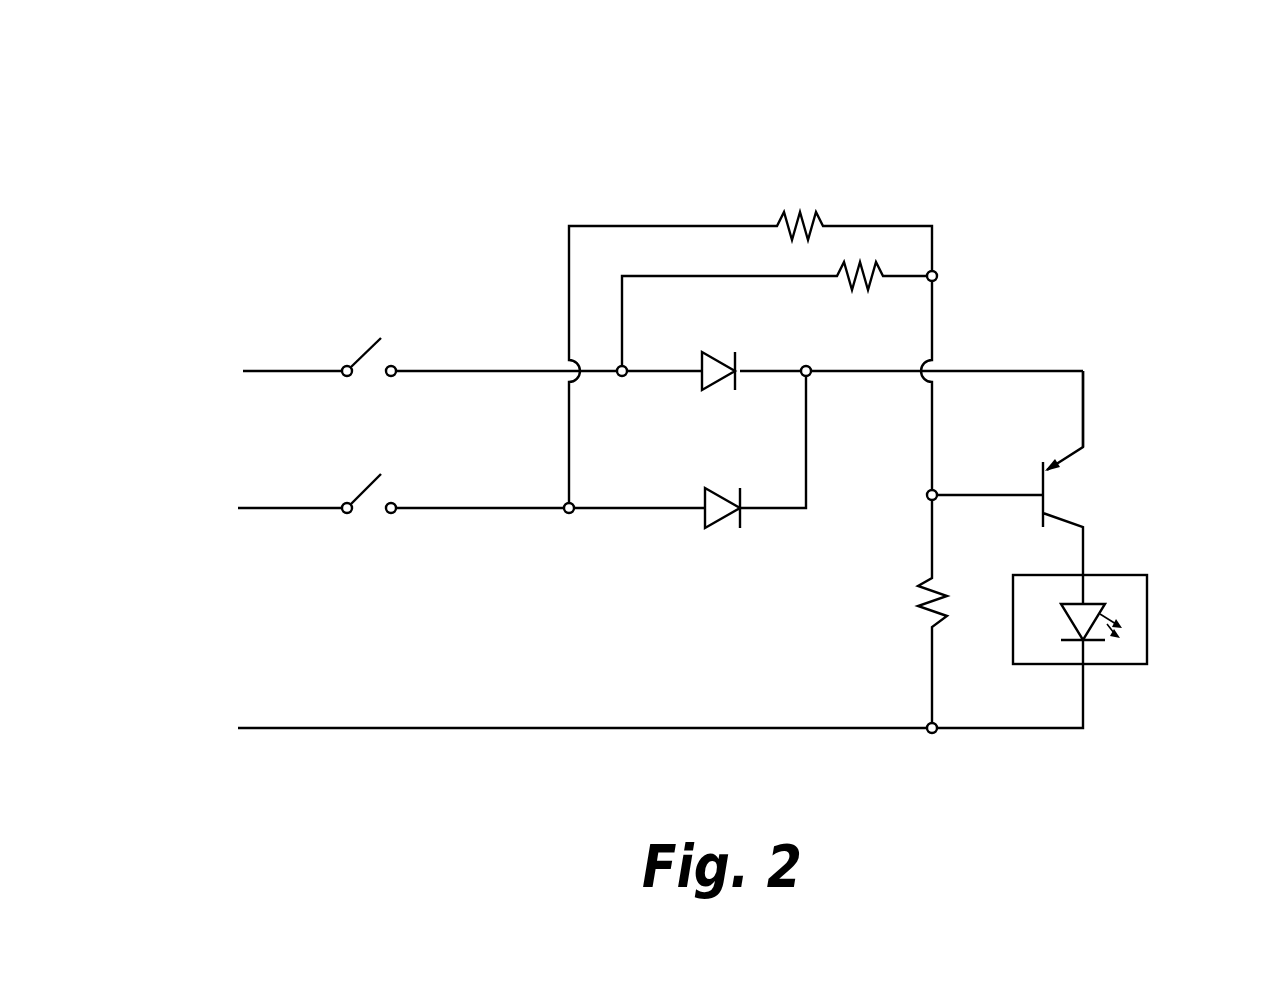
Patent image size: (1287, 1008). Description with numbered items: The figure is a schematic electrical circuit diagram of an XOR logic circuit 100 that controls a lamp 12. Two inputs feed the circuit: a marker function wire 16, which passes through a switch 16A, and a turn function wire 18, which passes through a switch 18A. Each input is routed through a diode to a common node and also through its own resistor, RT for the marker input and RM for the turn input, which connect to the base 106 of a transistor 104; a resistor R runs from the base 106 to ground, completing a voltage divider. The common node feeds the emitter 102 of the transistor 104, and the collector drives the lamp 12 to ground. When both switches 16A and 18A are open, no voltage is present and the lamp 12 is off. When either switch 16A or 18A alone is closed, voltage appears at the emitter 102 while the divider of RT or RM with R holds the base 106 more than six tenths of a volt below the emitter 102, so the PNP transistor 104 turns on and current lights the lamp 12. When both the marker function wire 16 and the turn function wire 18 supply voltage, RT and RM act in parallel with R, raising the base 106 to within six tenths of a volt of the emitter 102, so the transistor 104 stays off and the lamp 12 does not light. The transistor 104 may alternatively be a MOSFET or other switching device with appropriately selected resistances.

The XOR logic circuit 100 is at (704, 399).
The emitter 102 is at (1085, 408).
The transistor 104 is at (1172, 483).
The base 106 is at (1007, 497).
The lamp 12 is at (1131, 664).
The marker function wire 16 is at (463, 372).
The switch 16A is at (354, 338).
The turn function wire 18 is at (463, 509).
The switch 18A is at (354, 474).